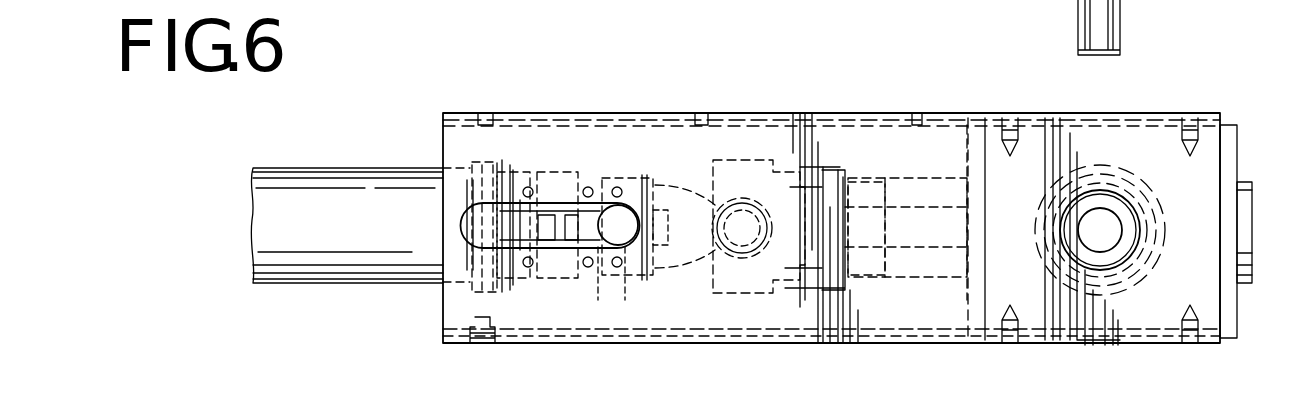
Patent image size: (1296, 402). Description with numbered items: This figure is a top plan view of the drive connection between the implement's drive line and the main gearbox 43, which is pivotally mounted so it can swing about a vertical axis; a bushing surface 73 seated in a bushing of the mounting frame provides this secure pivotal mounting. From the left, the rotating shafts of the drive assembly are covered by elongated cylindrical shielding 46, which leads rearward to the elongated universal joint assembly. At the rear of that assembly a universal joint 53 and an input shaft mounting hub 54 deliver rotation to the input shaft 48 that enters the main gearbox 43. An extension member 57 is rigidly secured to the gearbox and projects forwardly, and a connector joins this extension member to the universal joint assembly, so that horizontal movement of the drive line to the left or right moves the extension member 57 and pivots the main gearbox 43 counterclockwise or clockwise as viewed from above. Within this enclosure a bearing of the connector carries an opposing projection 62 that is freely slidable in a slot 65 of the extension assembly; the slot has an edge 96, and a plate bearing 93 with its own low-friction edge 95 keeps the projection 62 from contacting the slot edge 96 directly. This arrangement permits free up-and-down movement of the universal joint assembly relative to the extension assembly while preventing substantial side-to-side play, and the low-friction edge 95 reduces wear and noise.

The main gearbox 43 is at (1230, 135).
The cylindrical shielding 46 is at (309, 168).
The input shaft 48 is at (938, 212).
The universal joint 53 is at (740, 165).
The input shaft mounting hub 54 is at (880, 265).
The extension member 57 is at (872, 142).
The projection 62 is at (566, 205).
The slot 65 is at (607, 205).
The bushing surface 73 is at (1130, 222).
The plate bearing 93 is at (610, 246).
The edge 95 is at (521, 247).
The edge 96 is at (615, 232).